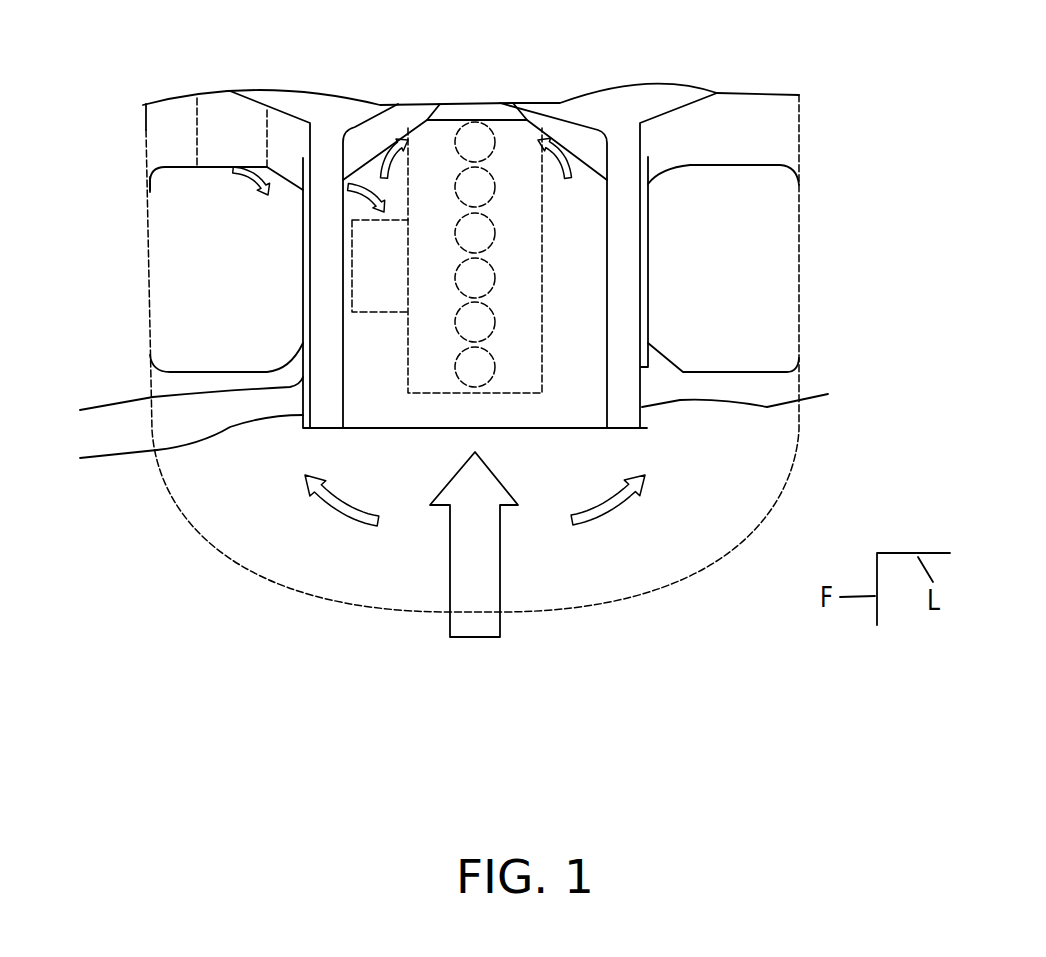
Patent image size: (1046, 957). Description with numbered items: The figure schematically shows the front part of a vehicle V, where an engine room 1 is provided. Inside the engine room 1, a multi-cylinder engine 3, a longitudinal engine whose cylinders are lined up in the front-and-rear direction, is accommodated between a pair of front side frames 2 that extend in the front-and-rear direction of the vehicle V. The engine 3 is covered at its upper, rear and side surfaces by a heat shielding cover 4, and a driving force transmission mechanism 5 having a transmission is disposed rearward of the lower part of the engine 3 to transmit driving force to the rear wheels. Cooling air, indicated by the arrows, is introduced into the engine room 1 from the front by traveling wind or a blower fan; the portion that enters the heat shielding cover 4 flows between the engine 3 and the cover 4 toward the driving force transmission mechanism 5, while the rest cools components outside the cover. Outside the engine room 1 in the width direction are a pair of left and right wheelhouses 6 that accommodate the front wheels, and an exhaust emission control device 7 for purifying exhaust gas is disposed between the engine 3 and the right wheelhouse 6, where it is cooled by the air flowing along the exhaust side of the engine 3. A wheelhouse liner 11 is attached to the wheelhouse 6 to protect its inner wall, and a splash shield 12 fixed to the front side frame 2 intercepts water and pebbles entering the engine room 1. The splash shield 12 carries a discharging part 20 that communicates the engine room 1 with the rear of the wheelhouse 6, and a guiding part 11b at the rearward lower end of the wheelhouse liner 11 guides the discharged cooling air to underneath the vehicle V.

The engine room 1 is at (358, 129).
The front side frame 2 is at (452, 420).
The multi-cylinder engine 3 is at (535, 138).
The heat shielding cover 4 is at (402, 133).
The driving force transmission mechanism 5 is at (424, 106).
The wheelhouse 6 is at (136, 198).
The exhaust emission control device 7 is at (380, 313).
The wheelhouse liner 11 is at (145, 188).
The guiding part 11b is at (197, 133).
The splash shield 12 is at (175, 403).
The discharging part 20 is at (332, 194).
The vehicle V is at (799, 440).